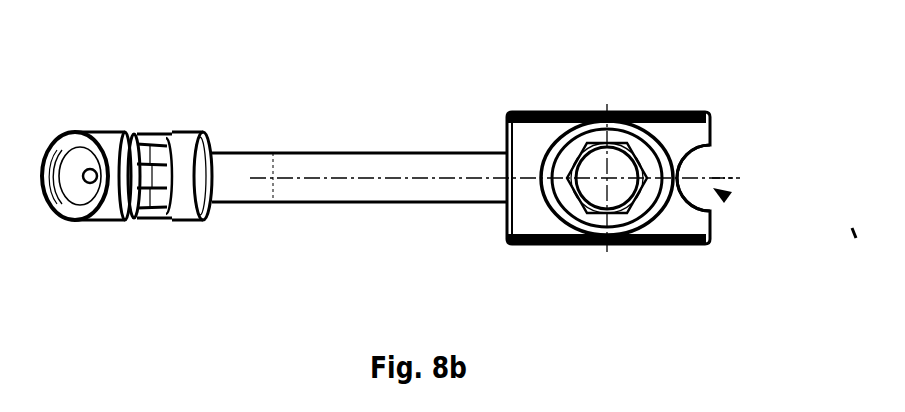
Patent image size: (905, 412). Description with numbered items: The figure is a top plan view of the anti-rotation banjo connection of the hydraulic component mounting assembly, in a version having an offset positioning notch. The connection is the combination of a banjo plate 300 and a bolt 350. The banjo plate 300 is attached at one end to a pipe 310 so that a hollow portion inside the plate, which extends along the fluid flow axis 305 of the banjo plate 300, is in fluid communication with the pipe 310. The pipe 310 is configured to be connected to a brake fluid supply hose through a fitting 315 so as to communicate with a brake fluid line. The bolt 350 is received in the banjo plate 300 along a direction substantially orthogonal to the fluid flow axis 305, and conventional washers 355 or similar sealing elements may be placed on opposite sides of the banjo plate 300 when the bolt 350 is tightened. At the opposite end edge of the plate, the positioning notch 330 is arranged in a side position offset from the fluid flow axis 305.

The fitting 315 is at (170, 133).
The pipe 310 is at (378, 157).
The banjo plate 300 is at (685, 112).
The washers 355 is at (645, 135).
The bolt 350 is at (587, 148).
The fluid flow axis 305 is at (723, 178).
The positioning notch 330 is at (724, 194).